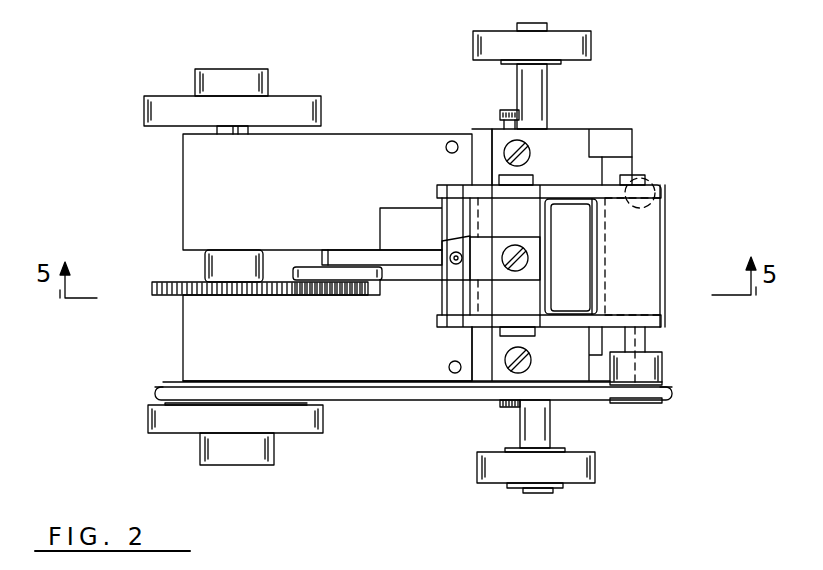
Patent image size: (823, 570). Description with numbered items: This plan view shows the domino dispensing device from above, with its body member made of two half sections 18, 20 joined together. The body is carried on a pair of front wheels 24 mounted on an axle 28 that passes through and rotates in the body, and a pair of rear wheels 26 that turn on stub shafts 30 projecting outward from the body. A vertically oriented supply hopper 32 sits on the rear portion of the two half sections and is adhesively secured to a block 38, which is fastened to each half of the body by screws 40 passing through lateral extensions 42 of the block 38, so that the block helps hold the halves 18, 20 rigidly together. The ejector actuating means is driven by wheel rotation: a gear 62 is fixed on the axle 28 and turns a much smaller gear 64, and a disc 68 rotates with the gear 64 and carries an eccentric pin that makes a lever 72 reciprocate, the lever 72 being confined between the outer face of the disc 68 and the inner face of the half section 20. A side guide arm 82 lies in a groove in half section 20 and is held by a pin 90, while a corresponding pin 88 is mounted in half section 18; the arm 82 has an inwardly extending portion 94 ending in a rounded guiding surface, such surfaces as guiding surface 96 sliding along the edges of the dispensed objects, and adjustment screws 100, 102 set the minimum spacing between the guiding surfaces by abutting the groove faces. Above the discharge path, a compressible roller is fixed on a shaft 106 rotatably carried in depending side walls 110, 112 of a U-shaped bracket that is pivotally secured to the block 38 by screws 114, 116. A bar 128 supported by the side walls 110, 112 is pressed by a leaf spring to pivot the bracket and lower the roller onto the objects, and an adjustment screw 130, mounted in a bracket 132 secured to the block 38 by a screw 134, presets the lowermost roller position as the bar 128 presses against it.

The half section 18 is at (238, 371).
The half section 20 is at (304, 186).
The front wheels 24 is at (142, 112).
The rear wheels 26 is at (591, 42).
The axle 28 is at (233, 133).
The stub shafts 30 is at (548, 97).
The supply hopper 32 is at (588, 250).
The block 38 is at (531, 226).
The screws 40 is at (509, 147).
The lateral extensions 42 is at (500, 162).
The gear 62 is at (163, 282).
The gear 64 is at (332, 295).
The disc 68 is at (303, 260).
The lever 72 is at (360, 255).
The arm 82 is at (612, 128).
The pin 88 is at (450, 372).
The pin 90 is at (447, 143).
The inwardly extending portion 94 is at (617, 157).
The guiding surface 96 is at (672, 190).
The adjustment screw 100 is at (513, 405).
The adjustment screw 102 is at (510, 110).
The shaft 106 is at (648, 339).
The side wall 110 is at (445, 332).
The side wall 112 is at (440, 187).
The screw 114 is at (537, 332).
The screw 116 is at (527, 174).
The bar 128 is at (450, 297).
The adjustment screw 130 is at (448, 265).
The bracket 132 is at (450, 240).
The screw 134 is at (515, 272).